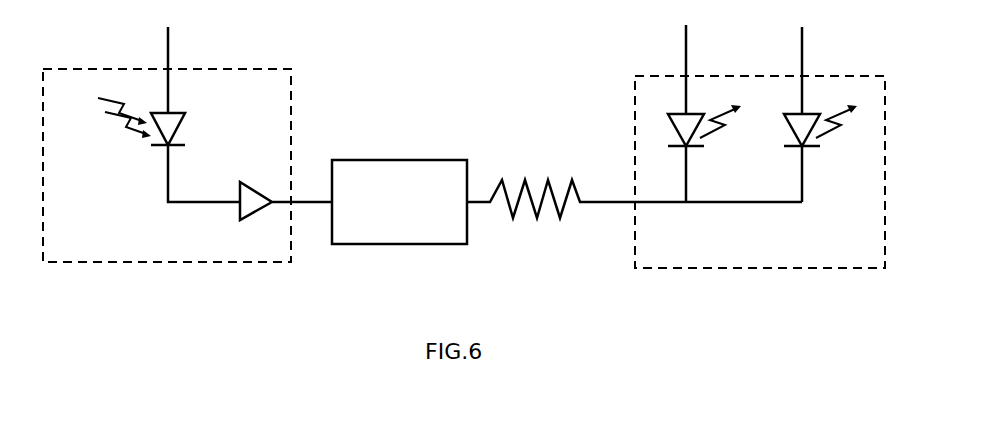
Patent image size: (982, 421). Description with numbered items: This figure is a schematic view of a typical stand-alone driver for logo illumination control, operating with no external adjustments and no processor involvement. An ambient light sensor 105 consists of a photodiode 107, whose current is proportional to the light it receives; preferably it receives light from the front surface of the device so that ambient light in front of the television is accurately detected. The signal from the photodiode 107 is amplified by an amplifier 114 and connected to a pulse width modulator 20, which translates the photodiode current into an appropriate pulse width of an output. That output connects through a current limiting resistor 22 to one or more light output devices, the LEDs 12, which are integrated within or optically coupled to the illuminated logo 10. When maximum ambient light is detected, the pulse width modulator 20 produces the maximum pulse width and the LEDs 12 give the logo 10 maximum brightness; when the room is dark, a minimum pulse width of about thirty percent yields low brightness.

The logo 10 is at (635, 88).
The LEDs 12 is at (795, 120).
The pulse width modulator 20 is at (412, 160).
The current limiting resistor 22 is at (512, 210).
The ambient light sensor 105 is at (291, 100).
The photodiode 107 is at (173, 115).
The amplifier 114 is at (243, 213).